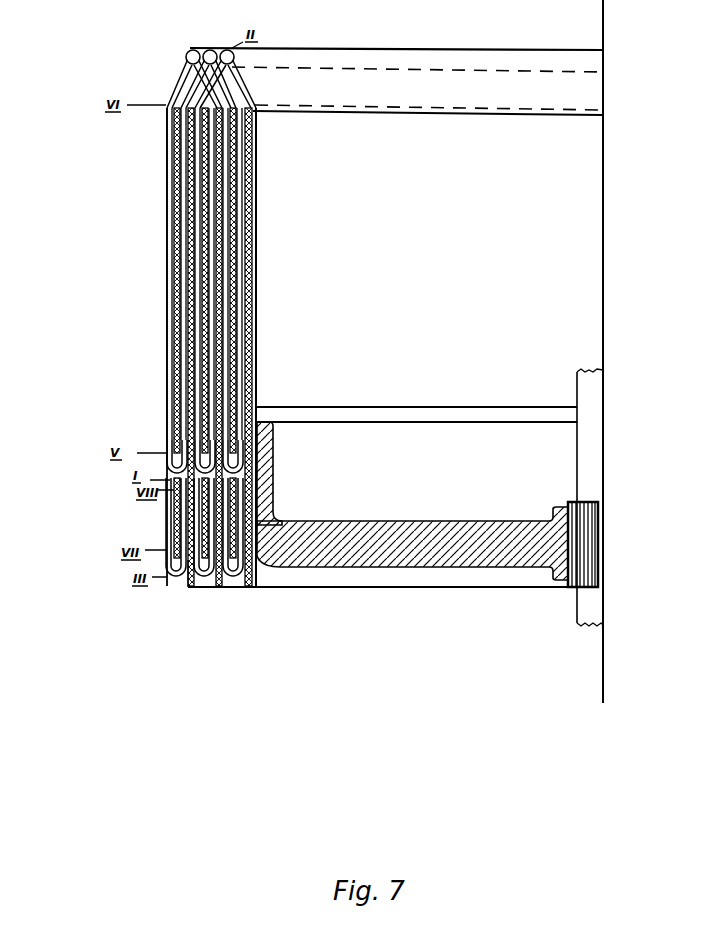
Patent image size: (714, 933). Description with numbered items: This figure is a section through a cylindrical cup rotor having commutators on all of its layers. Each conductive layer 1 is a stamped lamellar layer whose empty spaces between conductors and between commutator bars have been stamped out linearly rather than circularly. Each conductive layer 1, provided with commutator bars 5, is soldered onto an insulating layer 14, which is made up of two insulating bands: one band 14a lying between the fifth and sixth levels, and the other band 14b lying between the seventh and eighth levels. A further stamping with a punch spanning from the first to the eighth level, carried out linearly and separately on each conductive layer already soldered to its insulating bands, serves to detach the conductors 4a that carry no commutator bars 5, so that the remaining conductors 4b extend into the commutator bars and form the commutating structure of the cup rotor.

The conductive layer 1 is at (173, 148).
The conductors 4a is at (256, 203).
The conductors 4b is at (285, 522).
The commutator bars 5 is at (167, 508).
The insulating layer 14 is at (265, 480).
The insulating band 14a is at (256, 343).
The insulating band 14b is at (275, 510).